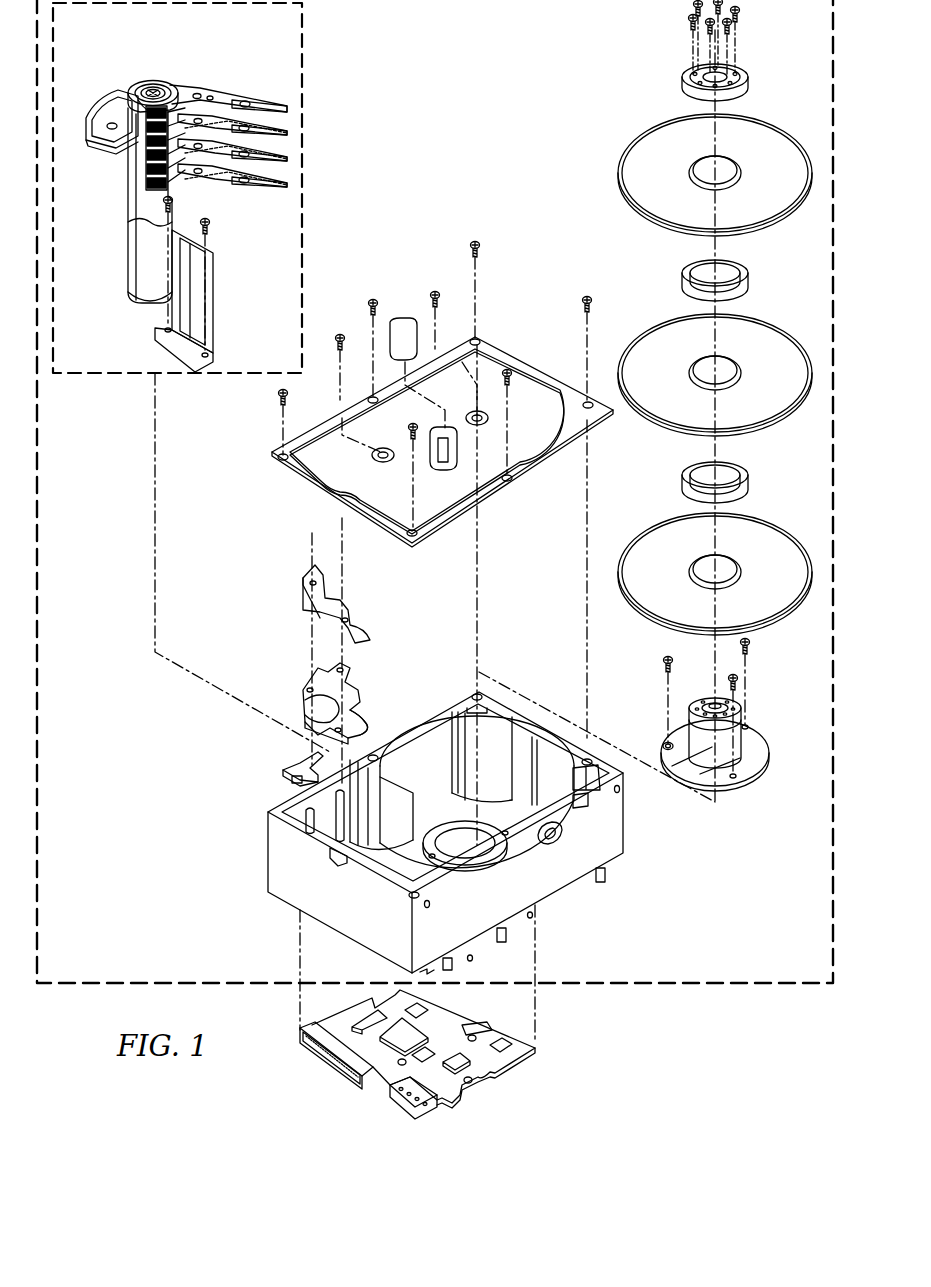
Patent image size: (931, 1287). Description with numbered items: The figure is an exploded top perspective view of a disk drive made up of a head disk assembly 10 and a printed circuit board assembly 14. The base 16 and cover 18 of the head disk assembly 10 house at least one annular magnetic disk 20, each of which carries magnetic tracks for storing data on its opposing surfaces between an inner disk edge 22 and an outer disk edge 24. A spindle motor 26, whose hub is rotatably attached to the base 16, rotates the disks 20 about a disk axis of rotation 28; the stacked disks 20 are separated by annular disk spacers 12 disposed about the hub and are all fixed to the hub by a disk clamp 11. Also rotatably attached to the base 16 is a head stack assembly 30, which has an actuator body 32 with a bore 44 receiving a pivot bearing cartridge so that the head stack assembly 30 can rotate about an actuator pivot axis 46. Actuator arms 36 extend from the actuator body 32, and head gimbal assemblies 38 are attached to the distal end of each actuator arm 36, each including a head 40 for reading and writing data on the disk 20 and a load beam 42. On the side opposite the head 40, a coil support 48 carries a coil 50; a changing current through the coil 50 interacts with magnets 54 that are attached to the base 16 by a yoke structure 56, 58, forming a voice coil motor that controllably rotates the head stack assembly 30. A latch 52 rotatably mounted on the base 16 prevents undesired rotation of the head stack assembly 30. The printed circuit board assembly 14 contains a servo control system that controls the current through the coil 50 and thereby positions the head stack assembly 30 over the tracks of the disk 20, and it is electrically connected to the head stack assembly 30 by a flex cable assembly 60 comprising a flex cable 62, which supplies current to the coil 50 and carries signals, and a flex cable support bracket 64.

The head disk assembly 10 is at (618, 982).
The disk clamp 11 is at (740, 63).
The annular disk spacer 12 is at (681, 282).
The printed circuit board assembly 14 is at (520, 1058).
The base 16 is at (565, 897).
The cover 18 is at (482, 342).
The annular magnetic disk 20 is at (765, 128).
The inner disk edge 22 is at (740, 160).
The outer disk edge 24 is at (660, 232).
The spindle motor 26 is at (755, 778).
The disk axis of rotation 28 is at (700, 805).
The head stack assembly 30 is at (113, 374).
The actuator body 32 is at (145, 82).
The actuator arm 36 is at (194, 94).
The head gimbal assembly 38 is at (244, 101).
The head 40 is at (288, 112).
The load beam 42 is at (268, 103).
The bore 44 is at (160, 88).
The actuator pivot axis 46 is at (245, 705).
The coil support 48 is at (108, 98).
The coil 50 is at (132, 98).
The latch 52 is at (283, 773).
The magnet 54 is at (308, 700).
The yoke structure 56 is at (306, 586).
The yoke structure 58 is at (362, 726).
The flex cable assembly 60 is at (128, 195).
The flex cable 62 is at (134, 300).
The flex cable support bracket 64 is at (215, 302).